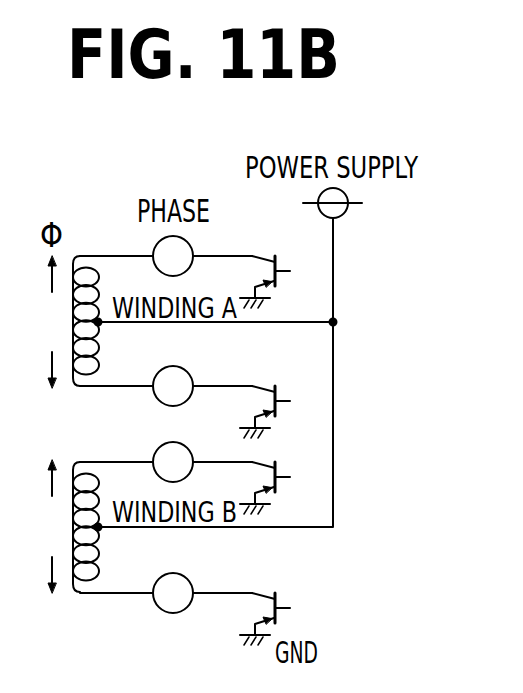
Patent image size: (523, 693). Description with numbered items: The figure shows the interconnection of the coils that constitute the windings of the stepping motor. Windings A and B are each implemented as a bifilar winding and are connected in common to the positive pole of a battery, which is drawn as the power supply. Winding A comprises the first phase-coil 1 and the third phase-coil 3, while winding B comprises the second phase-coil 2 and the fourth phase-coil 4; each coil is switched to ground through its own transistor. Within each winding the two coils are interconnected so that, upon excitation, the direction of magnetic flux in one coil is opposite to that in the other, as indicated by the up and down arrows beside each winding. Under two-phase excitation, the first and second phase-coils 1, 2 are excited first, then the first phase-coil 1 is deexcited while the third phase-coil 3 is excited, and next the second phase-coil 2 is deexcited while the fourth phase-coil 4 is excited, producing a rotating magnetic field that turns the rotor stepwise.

The first phase-coil 1 is at (185, 272).
The second phase-coil 2 is at (185, 478).
The third phase-coil 3 is at (185, 402).
The fourth phase-coil 4 is at (185, 609).